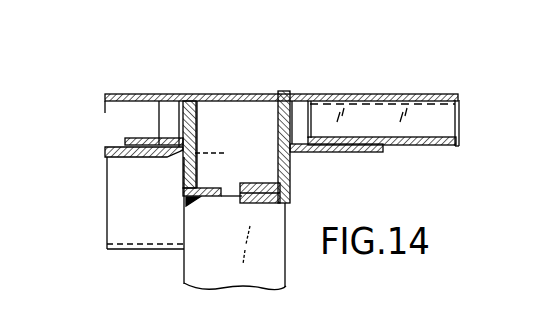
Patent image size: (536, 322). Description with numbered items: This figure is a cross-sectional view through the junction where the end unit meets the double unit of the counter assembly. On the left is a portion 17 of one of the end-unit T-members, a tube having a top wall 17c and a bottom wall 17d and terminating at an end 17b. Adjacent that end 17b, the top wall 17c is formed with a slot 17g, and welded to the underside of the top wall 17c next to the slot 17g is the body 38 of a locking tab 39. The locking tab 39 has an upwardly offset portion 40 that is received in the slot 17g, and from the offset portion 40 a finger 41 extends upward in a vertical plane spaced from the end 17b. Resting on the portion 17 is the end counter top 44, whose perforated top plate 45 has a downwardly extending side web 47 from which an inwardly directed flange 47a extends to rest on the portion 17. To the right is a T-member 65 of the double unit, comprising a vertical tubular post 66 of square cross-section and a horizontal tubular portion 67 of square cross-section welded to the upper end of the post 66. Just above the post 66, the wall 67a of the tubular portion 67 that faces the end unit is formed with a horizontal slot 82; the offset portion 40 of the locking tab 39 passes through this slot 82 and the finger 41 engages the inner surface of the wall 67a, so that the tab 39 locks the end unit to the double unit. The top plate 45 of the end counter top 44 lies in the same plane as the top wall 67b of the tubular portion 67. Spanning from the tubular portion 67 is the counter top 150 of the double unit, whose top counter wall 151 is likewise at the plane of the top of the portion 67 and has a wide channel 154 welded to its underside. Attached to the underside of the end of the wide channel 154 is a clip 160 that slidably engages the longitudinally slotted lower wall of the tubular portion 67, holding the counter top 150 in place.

The portion 17 is at (125, 255).
The end 17b is at (186, 228).
The top wall 17c is at (118, 148).
The bottom wall 17d is at (153, 247).
The slot 17g is at (160, 143).
The body 38 is at (108, 161).
The locking tab 39 is at (153, 173).
The upwardly offset portion 40 is at (174, 162).
The finger 41 is at (197, 123).
The end counter top 44 is at (132, 76).
The top perforated sheet metal plate 45 is at (138, 95).
The web 47 is at (177, 113).
The flange 47a is at (140, 140).
The T-member 65 is at (292, 272).
The vertical tubular post 66 is at (279, 237).
The horizontal tubular portion 67 is at (252, 89).
The wall 67a is at (190, 181).
The top wall 67b is at (198, 199).
The horizontal slot 82 is at (222, 152).
The counter top 150 is at (405, 75).
The top counter wall 151 is at (436, 92).
The wide channel 154 is at (420, 145).
The clip 160 is at (318, 157).